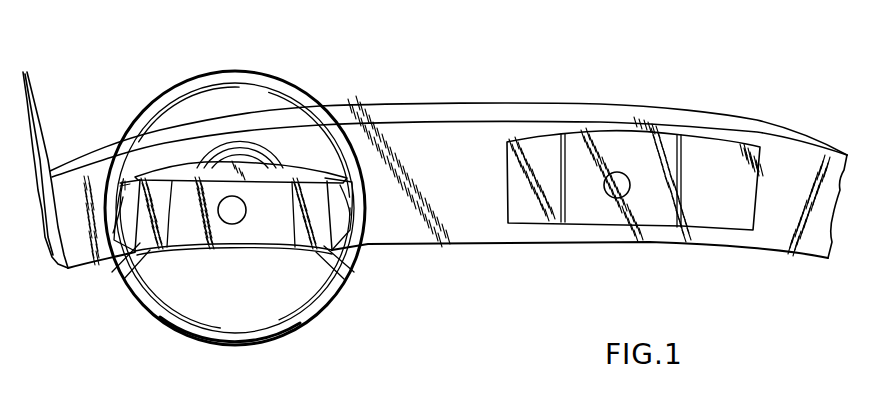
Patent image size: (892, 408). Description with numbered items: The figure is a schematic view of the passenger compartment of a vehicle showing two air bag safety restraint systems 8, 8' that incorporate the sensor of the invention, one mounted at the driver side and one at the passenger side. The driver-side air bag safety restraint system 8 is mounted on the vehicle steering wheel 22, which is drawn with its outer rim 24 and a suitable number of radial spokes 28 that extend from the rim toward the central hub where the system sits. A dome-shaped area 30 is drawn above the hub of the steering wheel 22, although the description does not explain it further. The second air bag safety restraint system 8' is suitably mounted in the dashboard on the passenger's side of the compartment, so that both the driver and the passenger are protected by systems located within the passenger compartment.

The air bag safety restraint system 8 is at (232, 196).
The air bag safety restraint system 8' is at (633, 148).
The steering wheel 22 is at (296, 342).
The outer rim 24 is at (178, 329).
The radial spokes 28 is at (125, 247).
The hub 30 is at (239, 146).